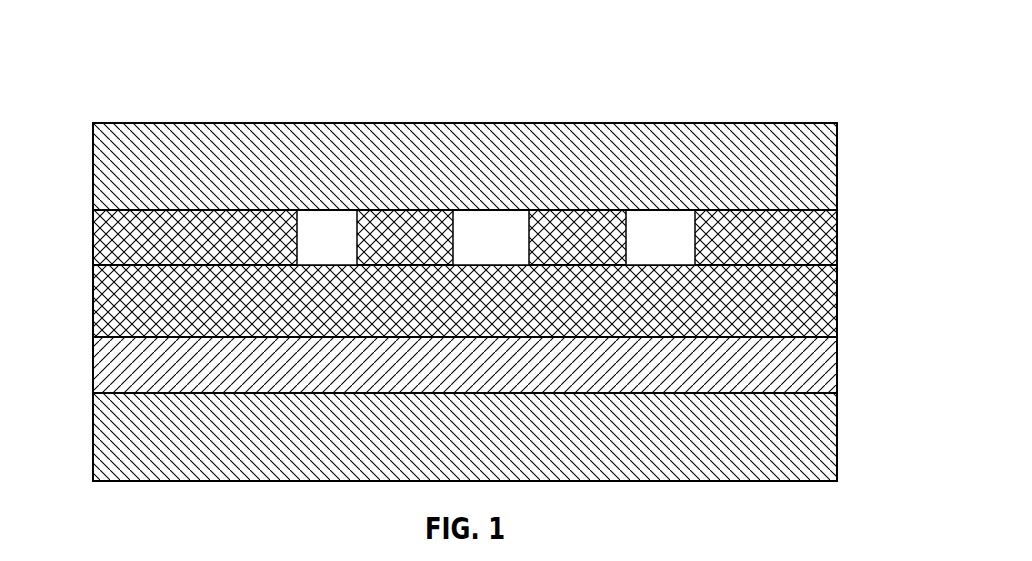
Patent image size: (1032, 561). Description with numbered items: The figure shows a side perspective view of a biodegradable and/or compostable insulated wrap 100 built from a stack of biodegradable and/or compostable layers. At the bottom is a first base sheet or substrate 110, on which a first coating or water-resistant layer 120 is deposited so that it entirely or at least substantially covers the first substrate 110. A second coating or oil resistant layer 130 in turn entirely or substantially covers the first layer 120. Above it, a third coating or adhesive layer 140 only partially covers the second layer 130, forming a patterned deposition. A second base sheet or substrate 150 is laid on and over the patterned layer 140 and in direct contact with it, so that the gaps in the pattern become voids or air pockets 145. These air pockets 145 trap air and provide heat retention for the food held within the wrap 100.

The insulated wrap 100 is at (120, 44).
The first substrate 110 is at (812, 442).
The first coating or water-resistant layer 120 is at (813, 363).
The second coating or oil resistant layer 130 is at (813, 303).
The third coating or adhesive layer 140 is at (483, 228).
The voids or air pockets 145 is at (327, 237).
The second substrate 150 is at (800, 136).